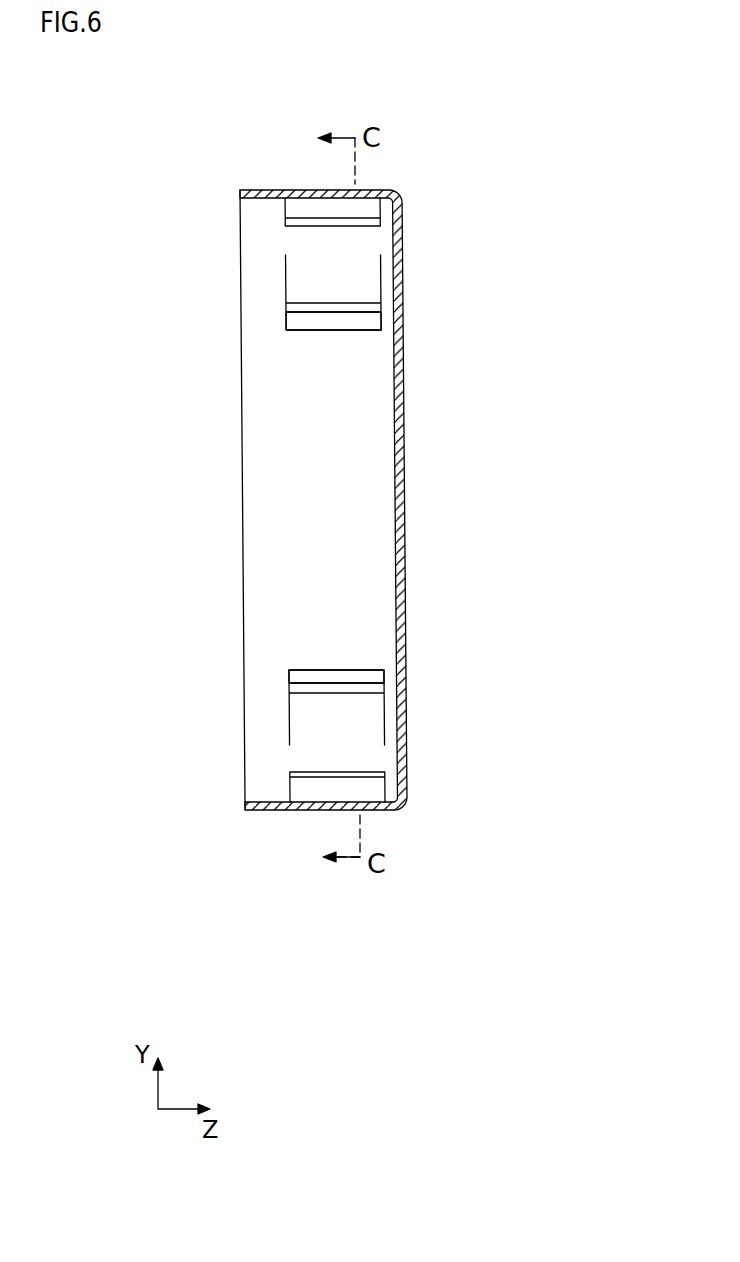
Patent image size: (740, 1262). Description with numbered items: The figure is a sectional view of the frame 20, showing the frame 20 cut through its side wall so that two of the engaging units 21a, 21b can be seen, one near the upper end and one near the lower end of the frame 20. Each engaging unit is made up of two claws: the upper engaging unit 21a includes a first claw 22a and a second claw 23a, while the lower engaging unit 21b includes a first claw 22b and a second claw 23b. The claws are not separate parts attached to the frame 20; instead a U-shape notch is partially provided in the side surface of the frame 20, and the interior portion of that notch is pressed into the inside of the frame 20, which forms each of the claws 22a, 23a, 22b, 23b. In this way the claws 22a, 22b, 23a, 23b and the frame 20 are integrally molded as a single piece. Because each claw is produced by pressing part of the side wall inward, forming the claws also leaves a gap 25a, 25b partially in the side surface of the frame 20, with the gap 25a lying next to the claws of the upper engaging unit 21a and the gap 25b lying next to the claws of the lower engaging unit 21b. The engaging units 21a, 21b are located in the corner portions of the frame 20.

The frame 20 is at (142, 137).
The engaging unit 21a is at (543, 210).
The engaging unit 21b is at (550, 673).
The first claw 22a is at (358, 212).
The first claw 22b is at (383, 777).
The second claw 23a is at (358, 278).
The second claw 23b is at (362, 710).
The gap 25a is at (340, 320).
The gap 25b is at (350, 677).